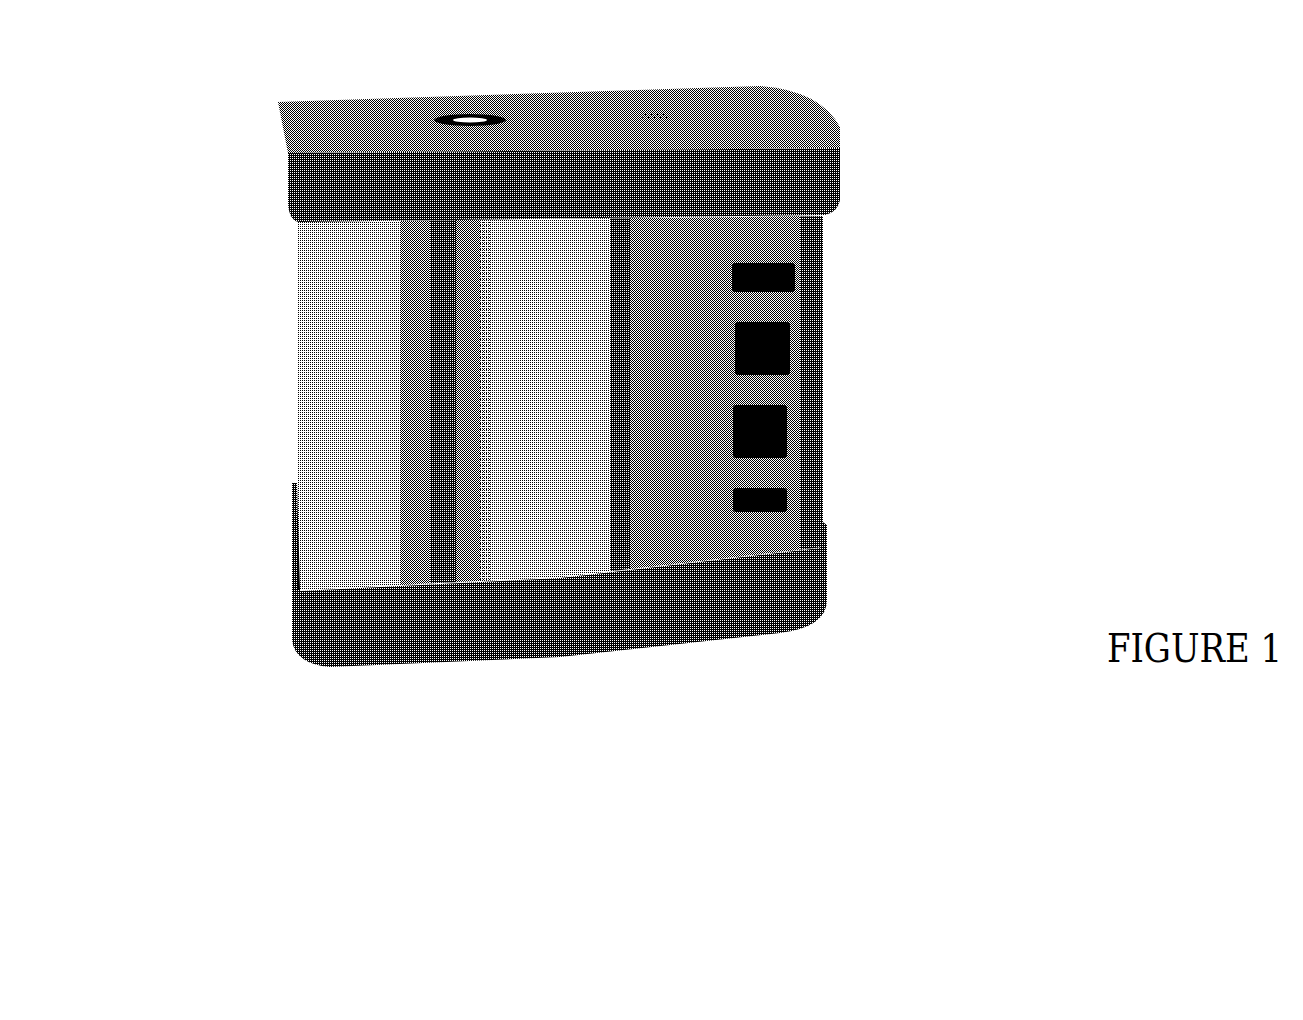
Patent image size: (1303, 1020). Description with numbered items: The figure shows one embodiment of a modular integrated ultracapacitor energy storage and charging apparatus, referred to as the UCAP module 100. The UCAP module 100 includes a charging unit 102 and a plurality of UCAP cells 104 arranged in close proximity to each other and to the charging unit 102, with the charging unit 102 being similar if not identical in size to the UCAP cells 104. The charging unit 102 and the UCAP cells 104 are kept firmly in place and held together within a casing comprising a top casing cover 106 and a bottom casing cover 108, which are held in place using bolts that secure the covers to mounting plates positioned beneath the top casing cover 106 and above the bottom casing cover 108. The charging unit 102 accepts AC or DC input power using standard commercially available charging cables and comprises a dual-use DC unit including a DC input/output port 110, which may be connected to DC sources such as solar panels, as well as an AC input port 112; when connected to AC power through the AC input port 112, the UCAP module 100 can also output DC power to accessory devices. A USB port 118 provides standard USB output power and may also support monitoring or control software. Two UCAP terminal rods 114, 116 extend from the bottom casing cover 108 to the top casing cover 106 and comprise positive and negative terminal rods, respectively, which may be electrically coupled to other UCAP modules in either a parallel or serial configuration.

The UCAP module 100 is at (616, 370).
The charging unit 102 is at (730, 231).
The UCAP cells 104 is at (300, 282).
The top casing cover 106 is at (768, 177).
The bottom casing cover 108 is at (817, 587).
The DC input/output port 110 is at (800, 287).
The AC input port 112 is at (800, 418).
The UCAP terminal rod 114 is at (468, 118).
The UCAP terminal rod 116 is at (648, 120).
The USB port 118 is at (790, 495).